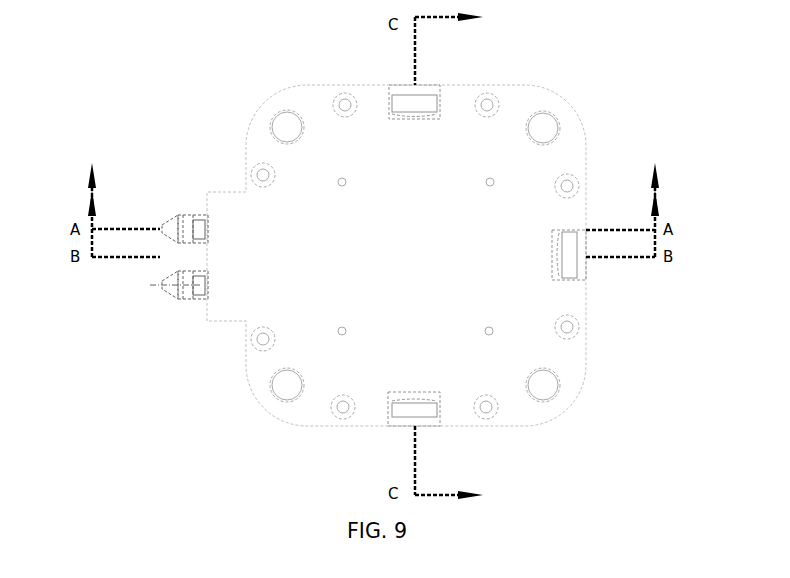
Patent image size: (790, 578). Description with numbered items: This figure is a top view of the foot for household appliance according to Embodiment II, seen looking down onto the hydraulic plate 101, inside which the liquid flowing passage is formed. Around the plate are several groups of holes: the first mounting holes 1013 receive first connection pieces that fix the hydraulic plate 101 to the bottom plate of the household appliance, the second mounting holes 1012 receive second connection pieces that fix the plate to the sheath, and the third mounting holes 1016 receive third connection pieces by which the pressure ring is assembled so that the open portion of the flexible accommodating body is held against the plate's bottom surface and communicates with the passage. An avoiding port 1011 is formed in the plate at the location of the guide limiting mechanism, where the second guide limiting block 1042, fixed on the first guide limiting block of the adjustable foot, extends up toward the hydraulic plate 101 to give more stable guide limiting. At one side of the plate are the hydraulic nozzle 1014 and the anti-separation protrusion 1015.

The hydraulic plate 101 is at (537, 353).
The avoiding port 1011 is at (440, 107).
The second mounting hole 1012 is at (287, 127).
The first mounting hole 1013 is at (567, 327).
The hydraulic nozzle 1014 is at (180, 277).
The anti-separation protrusion 1015 is at (195, 298).
The third mounting hole 1016 is at (492, 335).
The second guide limiting block 1042 is at (413, 100).